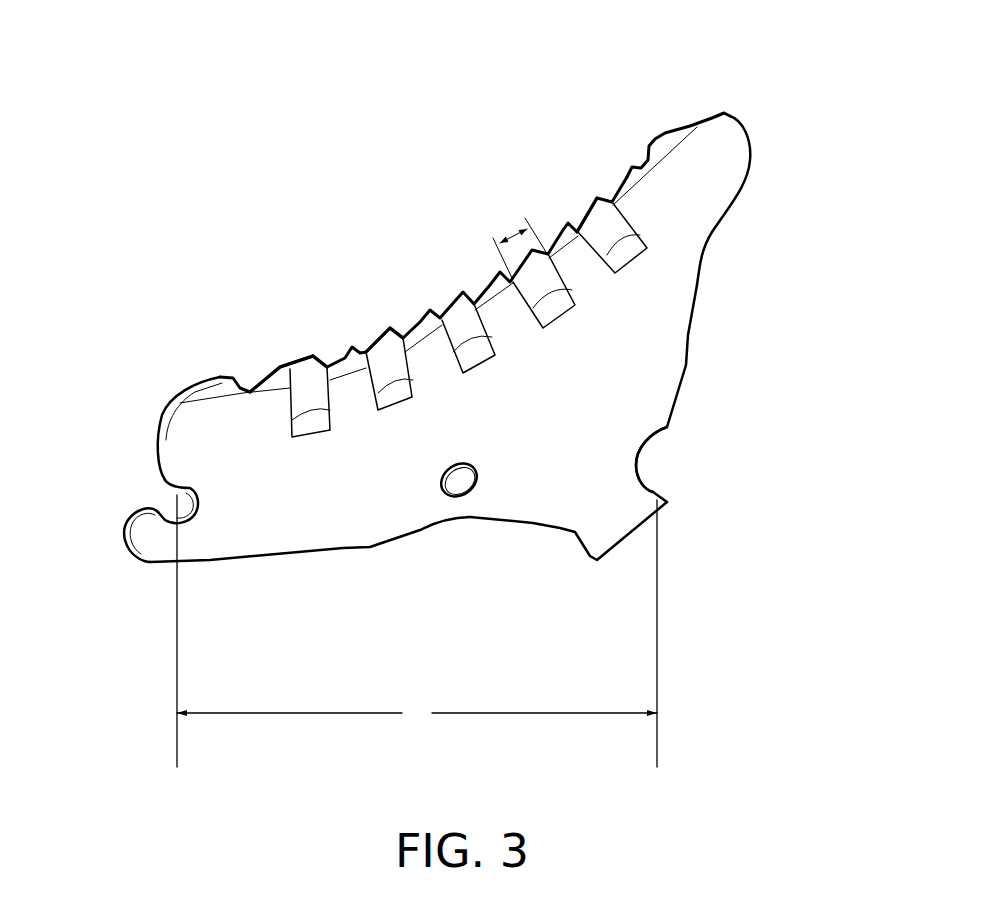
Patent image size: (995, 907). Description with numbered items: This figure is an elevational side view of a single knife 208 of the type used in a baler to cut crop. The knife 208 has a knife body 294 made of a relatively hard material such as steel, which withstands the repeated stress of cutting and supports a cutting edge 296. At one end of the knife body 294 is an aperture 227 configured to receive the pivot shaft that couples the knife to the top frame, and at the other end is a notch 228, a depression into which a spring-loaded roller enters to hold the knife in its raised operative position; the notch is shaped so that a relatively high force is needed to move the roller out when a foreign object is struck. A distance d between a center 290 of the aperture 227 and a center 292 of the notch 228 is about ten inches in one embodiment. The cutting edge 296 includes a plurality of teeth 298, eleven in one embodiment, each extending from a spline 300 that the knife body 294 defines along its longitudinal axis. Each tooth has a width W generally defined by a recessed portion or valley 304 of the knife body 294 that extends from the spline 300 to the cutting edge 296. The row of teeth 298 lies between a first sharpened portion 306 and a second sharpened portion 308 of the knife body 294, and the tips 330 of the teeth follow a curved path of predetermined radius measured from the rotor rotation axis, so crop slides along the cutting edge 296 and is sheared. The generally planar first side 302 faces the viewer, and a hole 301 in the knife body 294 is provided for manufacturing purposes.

The knife 208 is at (738, 210).
The aperture 227 is at (166, 496).
The notch 228 is at (664, 469).
The center of the aperture 290 is at (179, 505).
The center of the notch 292 is at (660, 460).
The knife body 294 is at (667, 343).
The cutting edge 296 is at (468, 246).
The teeth 298 is at (305, 358).
The spline 300 is at (348, 550).
The hole 301 is at (458, 478).
The first side 302 is at (528, 510).
The recessed portion 304 is at (457, 320).
The first sharpened portion 306 is at (203, 393).
The second sharpened portion 308 is at (663, 142).
The tips 330 is at (278, 363).
The width W is at (512, 232).
The distance d is at (417, 631).